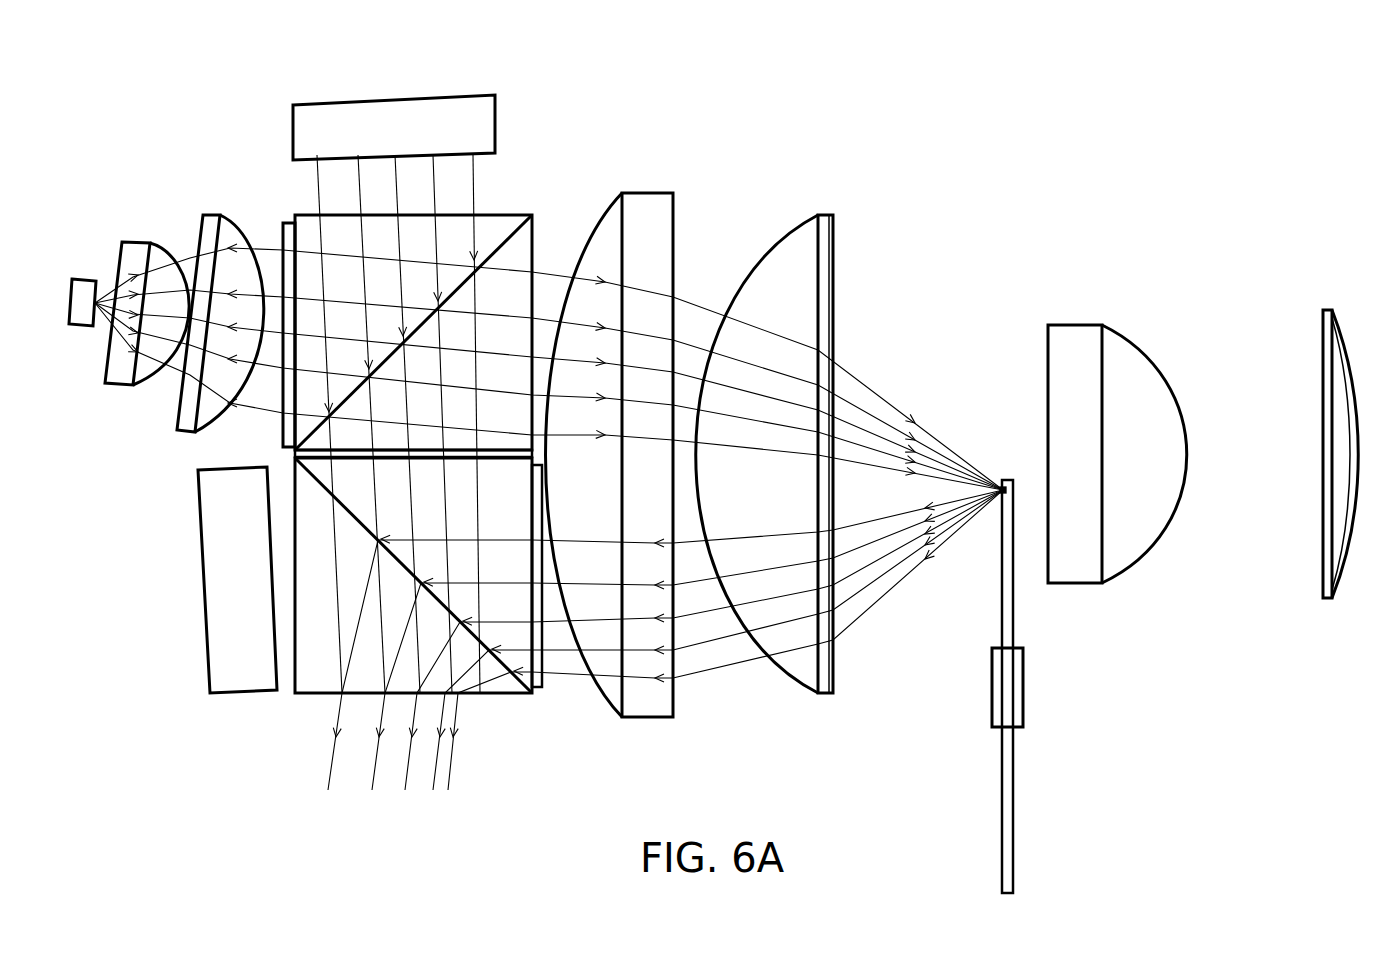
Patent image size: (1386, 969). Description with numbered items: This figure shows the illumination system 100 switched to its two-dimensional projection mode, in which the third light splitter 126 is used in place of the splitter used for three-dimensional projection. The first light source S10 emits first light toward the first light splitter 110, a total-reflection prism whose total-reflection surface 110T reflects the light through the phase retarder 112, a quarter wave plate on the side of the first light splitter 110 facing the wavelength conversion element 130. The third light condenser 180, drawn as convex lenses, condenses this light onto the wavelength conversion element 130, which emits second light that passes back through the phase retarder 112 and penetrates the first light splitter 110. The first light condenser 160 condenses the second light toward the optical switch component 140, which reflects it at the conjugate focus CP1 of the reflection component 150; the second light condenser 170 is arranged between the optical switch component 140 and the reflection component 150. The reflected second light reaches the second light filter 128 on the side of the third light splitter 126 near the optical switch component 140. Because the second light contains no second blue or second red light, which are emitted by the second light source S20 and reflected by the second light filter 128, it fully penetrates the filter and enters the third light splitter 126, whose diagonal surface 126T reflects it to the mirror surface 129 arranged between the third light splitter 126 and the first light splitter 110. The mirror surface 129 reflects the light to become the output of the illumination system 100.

The illumination system 100 is at (114, 120).
The first light splitter 110 is at (450, 291).
The total-reflection surface 110T is at (512, 242).
The phase retarder 112 is at (285, 225).
The third light splitter 126 is at (396, 618).
The beam splitting surface of second polarization beam splitter 126T is at (522, 694).
The second light filter 128 is at (545, 690).
The mirror surface 129 is at (322, 462).
The wavelength conversion element 130 is at (84, 278).
The optical switch component 140 is at (1013, 808).
The reflection component 150 is at (1332, 290).
The first light condenser 160 is at (685, 180).
The second light condenser 170 is at (1125, 308).
The third light condenser 180 is at (185, 213).
The first light source S10 is at (293, 120).
The second light source S20 is at (200, 583).
The conjugate focus CP1 is at (1002, 495).